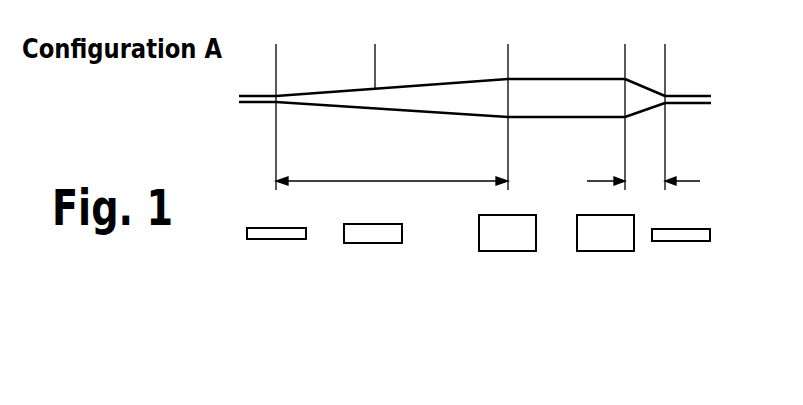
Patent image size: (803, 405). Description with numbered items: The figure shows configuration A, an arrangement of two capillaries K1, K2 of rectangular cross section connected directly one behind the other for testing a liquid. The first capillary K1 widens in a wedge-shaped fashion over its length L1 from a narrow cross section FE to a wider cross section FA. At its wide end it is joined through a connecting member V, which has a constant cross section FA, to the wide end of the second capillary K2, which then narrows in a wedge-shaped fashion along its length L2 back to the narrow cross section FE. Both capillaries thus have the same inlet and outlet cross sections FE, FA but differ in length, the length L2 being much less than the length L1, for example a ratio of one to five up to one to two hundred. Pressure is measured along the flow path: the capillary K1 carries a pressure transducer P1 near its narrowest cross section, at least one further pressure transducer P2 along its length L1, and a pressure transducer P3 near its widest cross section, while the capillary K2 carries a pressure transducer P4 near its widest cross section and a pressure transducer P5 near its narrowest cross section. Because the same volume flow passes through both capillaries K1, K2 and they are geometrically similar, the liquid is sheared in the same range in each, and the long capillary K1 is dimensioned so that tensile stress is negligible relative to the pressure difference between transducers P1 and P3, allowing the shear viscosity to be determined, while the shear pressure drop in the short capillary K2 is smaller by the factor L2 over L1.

The pressure transducer P1 is at (276, 97).
The pressure transducer P2 is at (375, 46).
The pressure transducer P3 is at (508, 97).
The pressure transducer P4 is at (625, 97).
The pressure transducer P5 is at (665, 97).
The capillary K1 is at (405, 103).
The capillary K2 is at (642, 112).
The connecting member V is at (550, 117).
The length L1 is at (392, 170).
The length L2 is at (643, 177).
The narrow cross section FE is at (688, 241).
The wide cross section FA is at (603, 251).